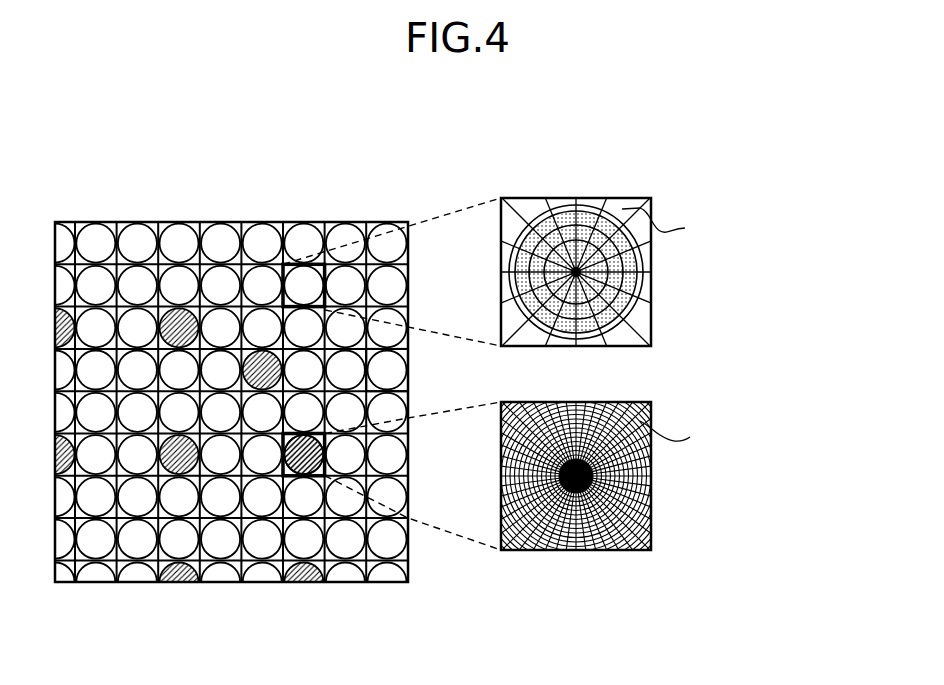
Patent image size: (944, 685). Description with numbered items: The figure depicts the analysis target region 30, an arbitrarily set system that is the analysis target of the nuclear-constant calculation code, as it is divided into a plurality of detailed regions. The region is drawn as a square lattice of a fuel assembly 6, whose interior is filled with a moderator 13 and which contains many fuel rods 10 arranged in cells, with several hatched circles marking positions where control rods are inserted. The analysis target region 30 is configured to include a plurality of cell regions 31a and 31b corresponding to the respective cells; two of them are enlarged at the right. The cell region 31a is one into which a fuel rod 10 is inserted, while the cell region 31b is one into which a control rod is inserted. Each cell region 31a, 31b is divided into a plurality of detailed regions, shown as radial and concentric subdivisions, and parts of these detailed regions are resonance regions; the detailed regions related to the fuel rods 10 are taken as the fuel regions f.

The fuel assembly 6 is at (376, 160).
The fuel rod 10 is at (305, 232).
The analysis target region 30 is at (408, 222).
The moderator 13 is at (404, 521).
The fuel region f is at (576, 245).
The cell region 31a is at (651, 310).
The cell region 31b is at (651, 528).